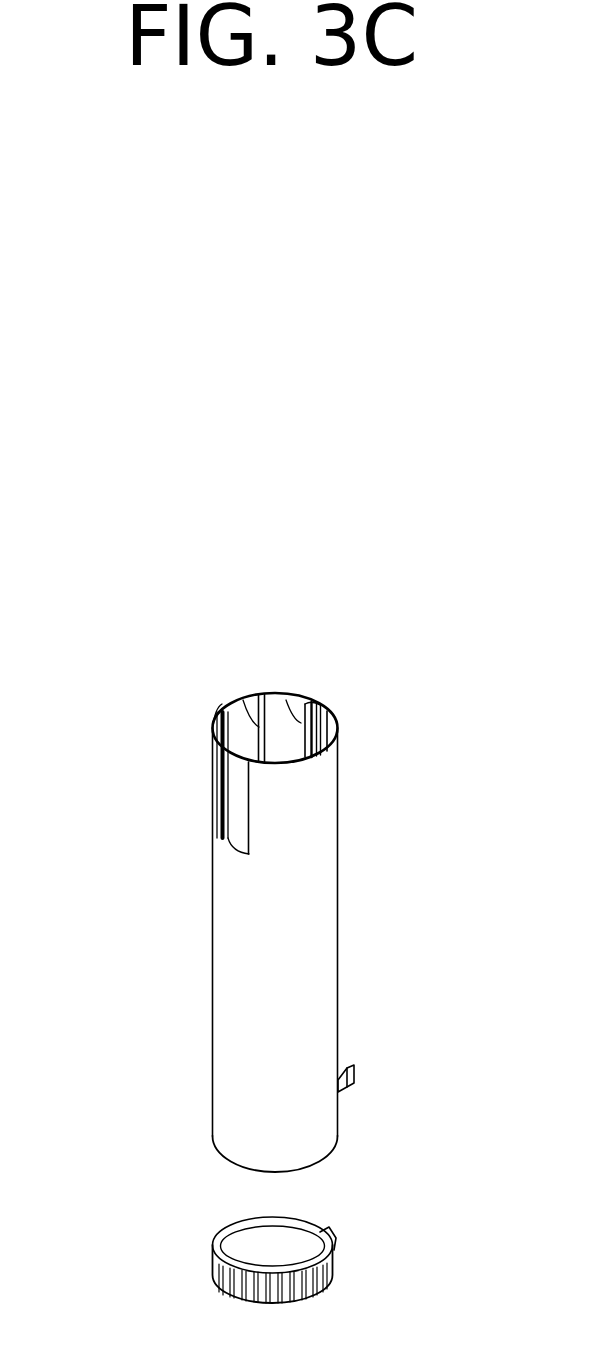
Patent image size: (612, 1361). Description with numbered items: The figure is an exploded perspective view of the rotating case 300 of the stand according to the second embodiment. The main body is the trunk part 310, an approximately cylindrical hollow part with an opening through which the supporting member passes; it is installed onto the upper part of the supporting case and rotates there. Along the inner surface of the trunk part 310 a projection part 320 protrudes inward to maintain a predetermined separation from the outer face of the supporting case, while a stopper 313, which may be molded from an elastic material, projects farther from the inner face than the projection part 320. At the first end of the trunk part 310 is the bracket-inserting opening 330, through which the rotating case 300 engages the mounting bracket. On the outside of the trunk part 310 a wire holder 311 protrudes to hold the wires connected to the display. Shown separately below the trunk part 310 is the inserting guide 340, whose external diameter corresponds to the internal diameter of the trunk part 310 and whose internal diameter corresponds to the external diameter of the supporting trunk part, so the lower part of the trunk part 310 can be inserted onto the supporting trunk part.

The rotating case 300 is at (134, 680).
The trunk part 310 is at (323, 887).
The wire holder 311 is at (355, 1085).
The stopper 313 is at (288, 690).
The projection part 320 is at (238, 697).
The bracket-inserting opening 330 is at (224, 818).
The inserting guide 340 is at (338, 1252).